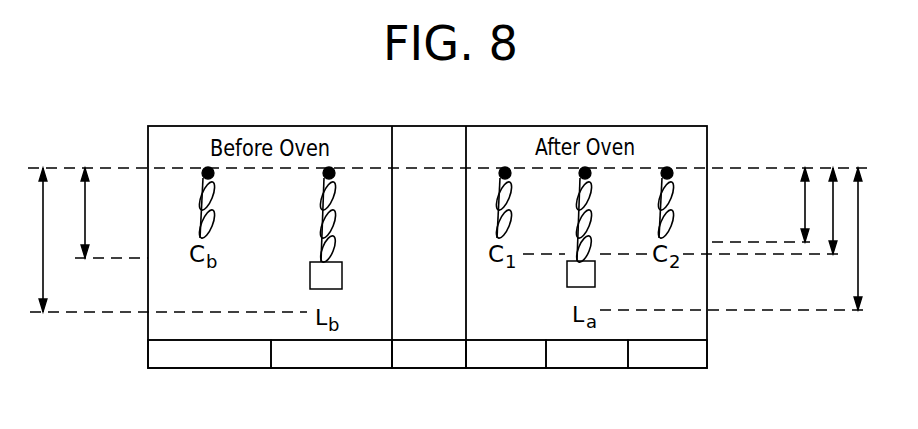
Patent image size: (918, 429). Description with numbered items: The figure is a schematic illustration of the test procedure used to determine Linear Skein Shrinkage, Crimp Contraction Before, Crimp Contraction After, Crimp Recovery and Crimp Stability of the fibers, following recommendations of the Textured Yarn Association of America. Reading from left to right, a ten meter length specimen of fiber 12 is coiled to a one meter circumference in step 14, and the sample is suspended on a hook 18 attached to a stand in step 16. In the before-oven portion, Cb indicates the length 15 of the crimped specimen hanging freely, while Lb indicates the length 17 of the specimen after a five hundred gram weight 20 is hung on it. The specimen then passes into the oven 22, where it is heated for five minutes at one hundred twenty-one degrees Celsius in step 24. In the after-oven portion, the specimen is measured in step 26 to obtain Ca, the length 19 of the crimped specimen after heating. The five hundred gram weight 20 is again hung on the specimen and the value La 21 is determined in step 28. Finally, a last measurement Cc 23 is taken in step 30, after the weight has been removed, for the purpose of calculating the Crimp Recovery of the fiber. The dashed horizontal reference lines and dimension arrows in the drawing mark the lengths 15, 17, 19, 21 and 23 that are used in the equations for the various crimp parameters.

The fiber 12 is at (214, 196).
The coiling step 14 is at (191, 364).
The length of the crimped specimen 15 is at (88, 210).
The suspending step 16 is at (314, 364).
The length of the specimen with weight 17 is at (45, 268).
The hook 18 is at (205, 169).
The length of the crimped specimen after heating 19 is at (803, 201).
The weight 20 is at (310, 277).
The La value 21 is at (858, 265).
The oven 22 is at (437, 135).
The final measurement Cc 23 is at (833, 202).
The heating step 24 is at (436, 364).
The measuring step after heating 26 is at (508, 364).
The weighted measuring step after heating 28 is at (588, 364).
The final measuring step 30 is at (670, 364).